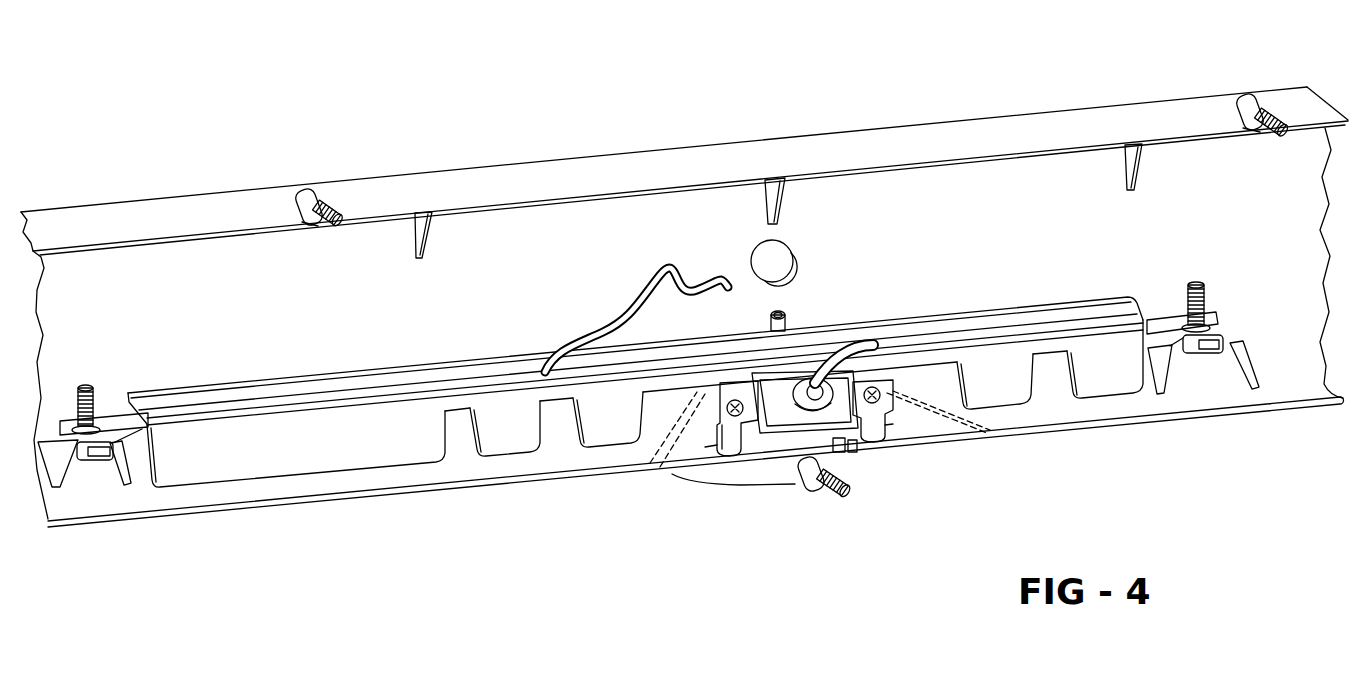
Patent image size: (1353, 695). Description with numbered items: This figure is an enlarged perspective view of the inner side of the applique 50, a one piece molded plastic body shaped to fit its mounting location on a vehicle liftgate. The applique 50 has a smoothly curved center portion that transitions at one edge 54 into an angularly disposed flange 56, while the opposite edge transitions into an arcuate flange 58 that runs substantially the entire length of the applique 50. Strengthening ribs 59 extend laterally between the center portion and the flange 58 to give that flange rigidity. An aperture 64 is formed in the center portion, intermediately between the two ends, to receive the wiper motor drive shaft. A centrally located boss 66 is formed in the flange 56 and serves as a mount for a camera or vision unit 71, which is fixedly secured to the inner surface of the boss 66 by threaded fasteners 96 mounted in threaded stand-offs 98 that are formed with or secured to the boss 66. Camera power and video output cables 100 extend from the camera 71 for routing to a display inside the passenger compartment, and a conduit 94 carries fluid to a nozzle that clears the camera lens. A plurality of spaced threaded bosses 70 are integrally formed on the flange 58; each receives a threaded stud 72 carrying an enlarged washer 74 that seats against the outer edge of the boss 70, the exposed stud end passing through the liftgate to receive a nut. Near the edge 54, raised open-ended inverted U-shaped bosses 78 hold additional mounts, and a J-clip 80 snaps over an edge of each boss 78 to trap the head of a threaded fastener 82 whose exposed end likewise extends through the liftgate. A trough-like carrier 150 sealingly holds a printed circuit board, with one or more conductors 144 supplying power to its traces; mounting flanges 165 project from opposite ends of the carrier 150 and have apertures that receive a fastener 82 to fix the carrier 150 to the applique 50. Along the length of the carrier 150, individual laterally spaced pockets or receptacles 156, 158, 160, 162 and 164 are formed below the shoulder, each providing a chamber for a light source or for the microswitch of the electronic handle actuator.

The applique 50 is at (805, 100).
The edge 54 is at (147, 282).
The angularly disposed flange 56 is at (363, 480).
The arcuate flange 58 is at (563, 170).
The strengthening ribs 59 is at (432, 226).
The aperture 64 is at (790, 250).
The boss 66 is at (737, 488).
The bosses 70 is at (310, 195).
The camera or vision unit 71 is at (866, 452).
The stud 72 is at (350, 213).
The washer 74 is at (305, 217).
The inverted U-shaped bosses 78 is at (57, 488).
The J-clip 80 is at (87, 462).
The threaded fastener 82 is at (78, 398).
The conduit 94 is at (783, 316).
The threaded fasteners 96 is at (727, 385).
The threaded stand-offs 98 is at (716, 447).
The camera power and video output cables 100 is at (857, 332).
The conductors 144 is at (620, 322).
The carrier 150 is at (258, 455).
The pocket or receptacle 156 is at (1117, 387).
The pocket or receptacle 158 is at (1013, 400).
The pocket or receptacle 160 is at (588, 440).
The pocket or receptacle 162 is at (510, 448).
The pocket or receptacle 164 is at (233, 470).
The mounting flanges 165 is at (110, 420).